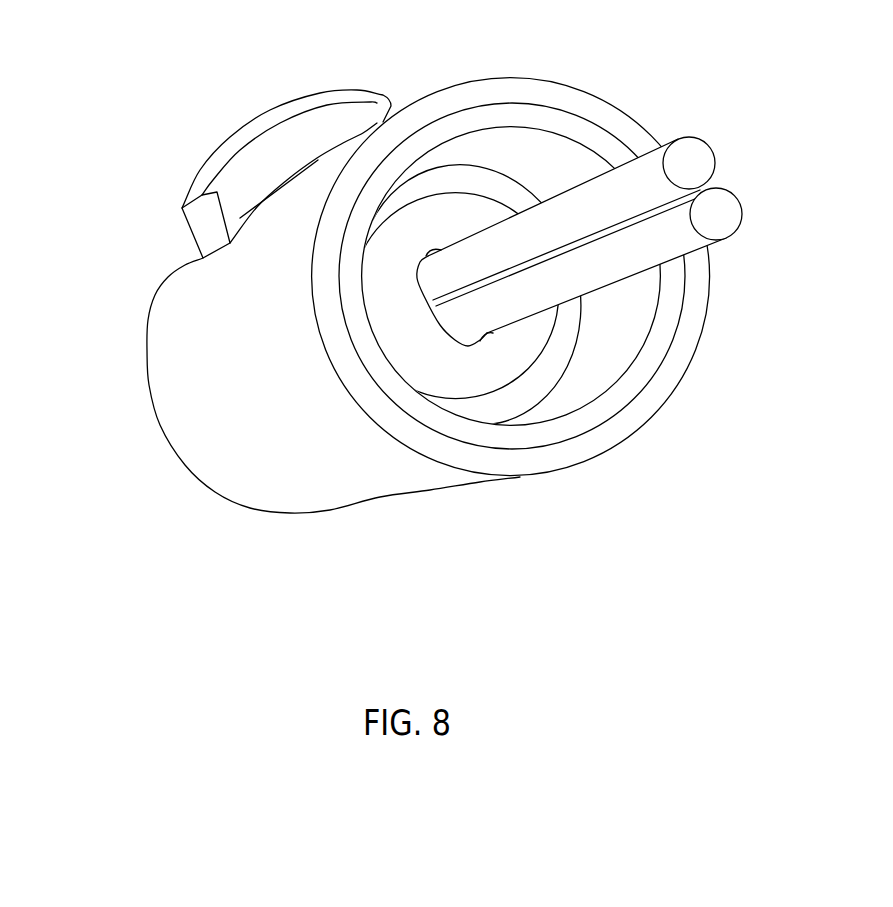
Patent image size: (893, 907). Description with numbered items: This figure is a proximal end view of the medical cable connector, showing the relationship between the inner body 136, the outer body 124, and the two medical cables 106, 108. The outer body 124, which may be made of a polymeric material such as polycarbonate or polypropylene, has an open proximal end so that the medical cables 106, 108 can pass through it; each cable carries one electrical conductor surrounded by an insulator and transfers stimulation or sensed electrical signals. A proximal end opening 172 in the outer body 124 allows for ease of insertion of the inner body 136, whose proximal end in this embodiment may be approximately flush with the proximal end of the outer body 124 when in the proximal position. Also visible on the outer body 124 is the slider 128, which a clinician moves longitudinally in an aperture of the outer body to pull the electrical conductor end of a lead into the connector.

The medical cable 106 is at (690, 148).
The medical cable 108 is at (723, 220).
The outer body 124 is at (160, 335).
The slider 128 is at (265, 115).
The inner body 136 is at (480, 370).
The proximal end opening 172 is at (535, 127).